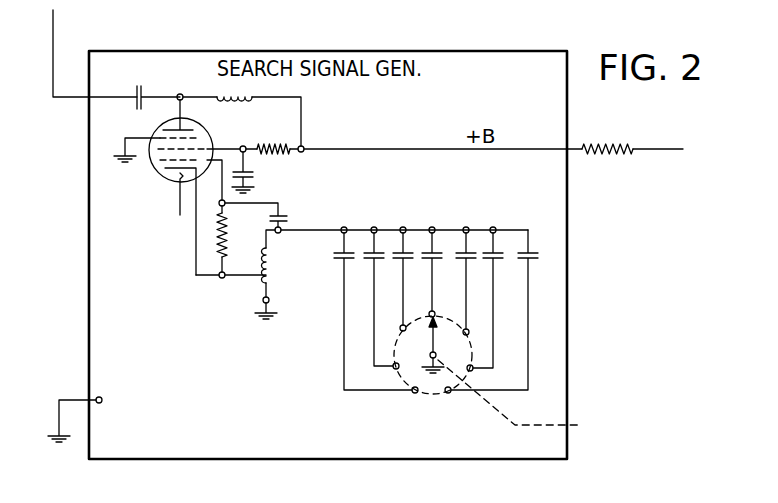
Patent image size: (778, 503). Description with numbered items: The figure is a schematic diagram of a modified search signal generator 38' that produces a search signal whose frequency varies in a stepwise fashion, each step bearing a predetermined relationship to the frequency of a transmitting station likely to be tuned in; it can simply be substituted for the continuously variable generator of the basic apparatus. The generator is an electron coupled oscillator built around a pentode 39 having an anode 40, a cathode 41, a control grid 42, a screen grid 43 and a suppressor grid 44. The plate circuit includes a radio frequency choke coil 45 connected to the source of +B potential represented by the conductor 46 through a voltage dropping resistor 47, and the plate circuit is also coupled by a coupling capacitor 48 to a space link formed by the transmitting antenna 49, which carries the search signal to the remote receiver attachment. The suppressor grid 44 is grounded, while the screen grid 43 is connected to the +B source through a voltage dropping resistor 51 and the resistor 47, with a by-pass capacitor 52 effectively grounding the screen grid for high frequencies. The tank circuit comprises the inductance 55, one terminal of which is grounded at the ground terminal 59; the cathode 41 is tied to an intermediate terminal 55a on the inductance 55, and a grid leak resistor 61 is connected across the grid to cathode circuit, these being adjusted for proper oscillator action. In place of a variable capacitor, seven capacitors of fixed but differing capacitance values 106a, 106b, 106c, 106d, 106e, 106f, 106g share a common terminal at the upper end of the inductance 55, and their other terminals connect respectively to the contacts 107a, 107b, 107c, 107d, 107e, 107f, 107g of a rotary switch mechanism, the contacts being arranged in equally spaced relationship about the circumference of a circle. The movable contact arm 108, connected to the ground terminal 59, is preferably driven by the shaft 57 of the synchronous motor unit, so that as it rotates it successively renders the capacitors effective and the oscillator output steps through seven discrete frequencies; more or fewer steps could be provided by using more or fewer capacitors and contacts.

The search signal generator 38' is at (328, 240).
The pentode 39 is at (160, 180).
The anode 40 is at (204, 125).
The cathode 41 is at (173, 195).
The control grid 42 is at (162, 171).
The screen grid 43 is at (208, 147).
The suppressor grid 44 is at (155, 138).
The radio frequency choke coil 45 is at (218, 93).
The conductor 46 is at (665, 147).
The voltage dropping resistor 47 is at (606, 145).
The coupling capacitor 48 is at (135, 95).
The antenna 49 is at (53, 92).
The voltage dropping resistor 51 is at (290, 125).
The by-pass capacitor 52 is at (252, 175).
The inductance 55 is at (272, 272).
The intermediate terminal 55a is at (256, 218).
The shaft 57 is at (549, 424).
The ground terminal 59 is at (262, 310).
The grid leak resistor 61 is at (217, 219).
The capacitor 106a is at (342, 276).
The capacitor 106b is at (372, 276).
The capacitor 106c is at (401, 272).
The capacitor 106d is at (431, 260).
The capacitor 106e is at (462, 266).
The capacitor 106f is at (490, 266).
The capacitor 106g is at (523, 268).
The contact 107a is at (412, 392).
The contact 107b is at (393, 368).
The contact 107c is at (405, 331).
The contact 107d is at (436, 318).
The contact 107e is at (469, 332).
The contact 107f is at (470, 371).
The contact 107g is at (448, 393).
The movable contact arm 108 is at (435, 355).